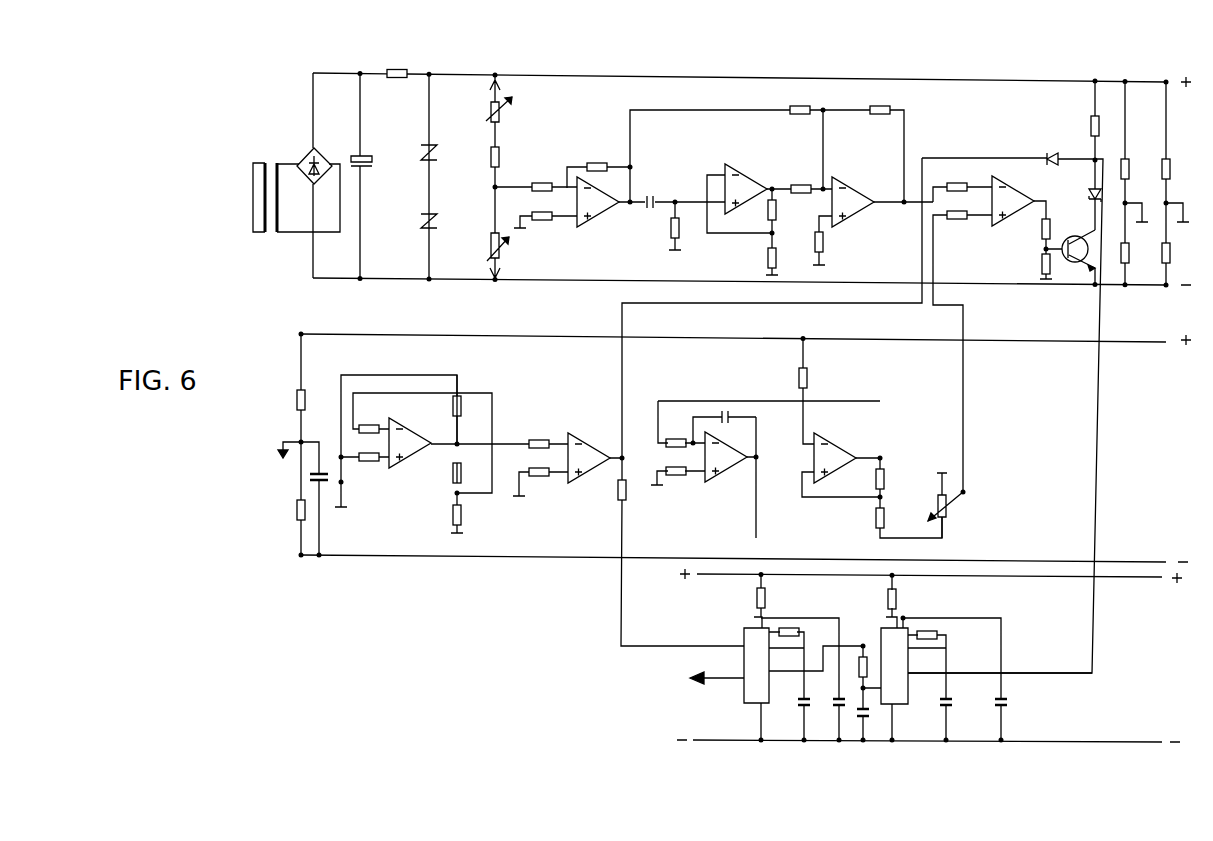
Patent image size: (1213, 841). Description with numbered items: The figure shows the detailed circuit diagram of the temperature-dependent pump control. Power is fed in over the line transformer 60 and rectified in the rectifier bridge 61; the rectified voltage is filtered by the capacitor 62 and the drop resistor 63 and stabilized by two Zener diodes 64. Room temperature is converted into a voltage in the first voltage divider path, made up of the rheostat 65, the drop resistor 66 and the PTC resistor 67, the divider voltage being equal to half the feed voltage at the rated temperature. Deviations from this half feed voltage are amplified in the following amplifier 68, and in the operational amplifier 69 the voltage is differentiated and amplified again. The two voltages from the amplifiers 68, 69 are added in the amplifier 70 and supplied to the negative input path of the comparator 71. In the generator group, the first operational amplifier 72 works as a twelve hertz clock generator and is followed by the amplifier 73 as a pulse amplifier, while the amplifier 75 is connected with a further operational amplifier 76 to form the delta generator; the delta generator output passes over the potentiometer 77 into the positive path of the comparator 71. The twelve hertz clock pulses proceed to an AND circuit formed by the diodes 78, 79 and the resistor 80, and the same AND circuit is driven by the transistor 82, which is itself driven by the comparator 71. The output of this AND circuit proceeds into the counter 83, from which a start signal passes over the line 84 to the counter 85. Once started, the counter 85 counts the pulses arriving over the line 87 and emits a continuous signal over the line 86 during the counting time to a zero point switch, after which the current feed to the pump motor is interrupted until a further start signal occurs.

The line transformer 60 is at (277, 233).
The rectifier bridge 61 is at (299, 156).
The capacitor 62 is at (371, 168).
The drop resistor 63 is at (398, 69).
The Zener diodes 64 is at (438, 157).
The rheostat 65 is at (512, 97).
The drop resistor 66 is at (501, 157).
The PTC resistor 67 is at (504, 251).
The amplifier 68 is at (598, 212).
The operational amplifier 69 is at (747, 182).
The amplifier 70 is at (857, 192).
The comparator 71 is at (1027, 203).
The first operational amplifier 72 is at (409, 441).
The amplifier 73 is at (591, 451).
The amplifier 75 is at (841, 447).
The operational amplifier 76 is at (726, 460).
The potentiometer 77 is at (956, 511).
The diode 78 is at (1090, 192).
The diode 79 is at (1052, 153).
The resistor 80 is at (1101, 121).
The transistor 82 is at (1078, 267).
The counter 83 is at (903, 698).
The line 84 is at (851, 646).
The counter 85 is at (747, 692).
The line 86 is at (718, 677).
The line 87 is at (621, 632).